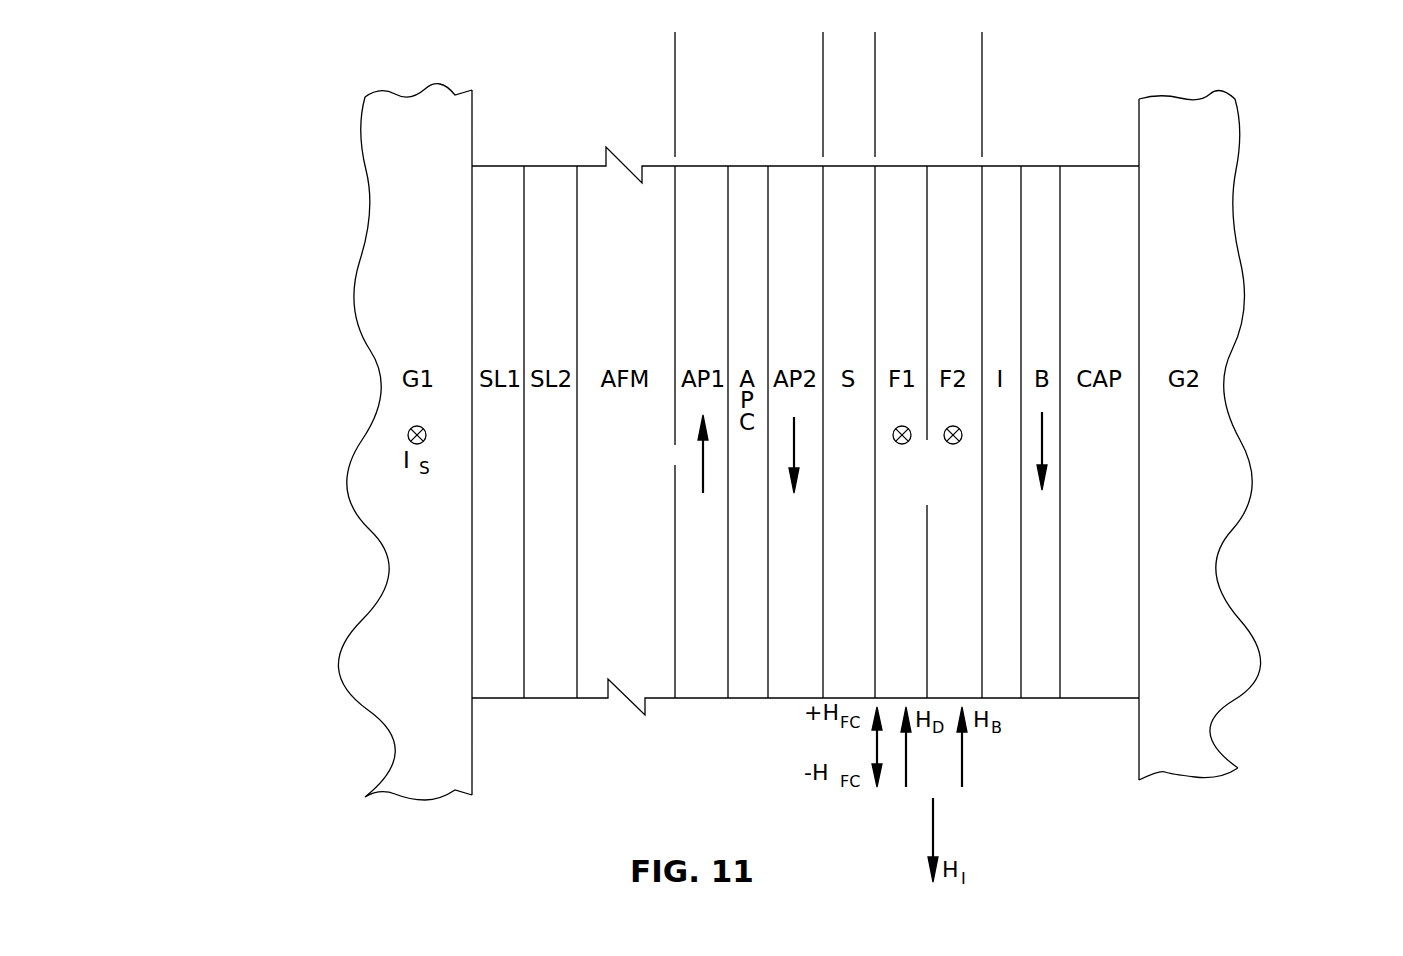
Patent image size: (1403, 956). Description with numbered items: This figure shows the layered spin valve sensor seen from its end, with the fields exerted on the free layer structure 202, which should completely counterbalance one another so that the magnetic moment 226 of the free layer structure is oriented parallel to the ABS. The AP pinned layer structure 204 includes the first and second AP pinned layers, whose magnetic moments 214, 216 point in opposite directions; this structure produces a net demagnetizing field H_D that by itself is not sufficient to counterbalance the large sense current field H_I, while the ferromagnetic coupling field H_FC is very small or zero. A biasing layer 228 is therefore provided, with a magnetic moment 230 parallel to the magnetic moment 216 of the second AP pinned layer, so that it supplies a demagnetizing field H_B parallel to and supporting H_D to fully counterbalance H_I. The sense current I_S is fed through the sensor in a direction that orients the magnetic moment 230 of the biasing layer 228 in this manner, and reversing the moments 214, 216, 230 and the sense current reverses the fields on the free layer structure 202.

The AP pinned layer structure 204 is at (823, 43).
The free layer structure 202 is at (875, 43).
The biasing layer 228 is at (1041, 172).
The magnetic moment of the first AP pinned layer 214 is at (703, 456).
The magnetic moment of the second AP pinned layer 216 is at (794, 437).
The magnetic moment of the free layer structure 226 is at (909, 442).
The magnetic moment of the biasing layer 230 is at (1042, 437).